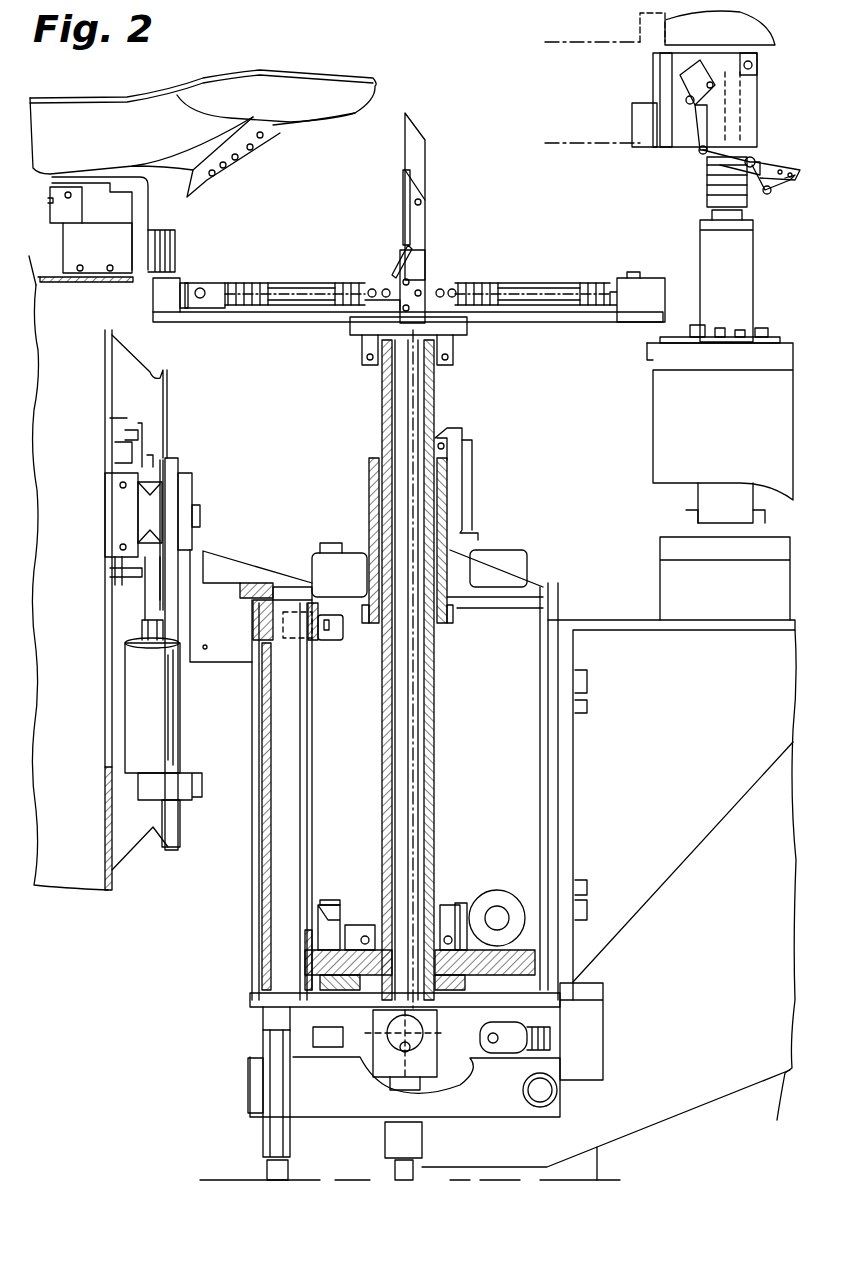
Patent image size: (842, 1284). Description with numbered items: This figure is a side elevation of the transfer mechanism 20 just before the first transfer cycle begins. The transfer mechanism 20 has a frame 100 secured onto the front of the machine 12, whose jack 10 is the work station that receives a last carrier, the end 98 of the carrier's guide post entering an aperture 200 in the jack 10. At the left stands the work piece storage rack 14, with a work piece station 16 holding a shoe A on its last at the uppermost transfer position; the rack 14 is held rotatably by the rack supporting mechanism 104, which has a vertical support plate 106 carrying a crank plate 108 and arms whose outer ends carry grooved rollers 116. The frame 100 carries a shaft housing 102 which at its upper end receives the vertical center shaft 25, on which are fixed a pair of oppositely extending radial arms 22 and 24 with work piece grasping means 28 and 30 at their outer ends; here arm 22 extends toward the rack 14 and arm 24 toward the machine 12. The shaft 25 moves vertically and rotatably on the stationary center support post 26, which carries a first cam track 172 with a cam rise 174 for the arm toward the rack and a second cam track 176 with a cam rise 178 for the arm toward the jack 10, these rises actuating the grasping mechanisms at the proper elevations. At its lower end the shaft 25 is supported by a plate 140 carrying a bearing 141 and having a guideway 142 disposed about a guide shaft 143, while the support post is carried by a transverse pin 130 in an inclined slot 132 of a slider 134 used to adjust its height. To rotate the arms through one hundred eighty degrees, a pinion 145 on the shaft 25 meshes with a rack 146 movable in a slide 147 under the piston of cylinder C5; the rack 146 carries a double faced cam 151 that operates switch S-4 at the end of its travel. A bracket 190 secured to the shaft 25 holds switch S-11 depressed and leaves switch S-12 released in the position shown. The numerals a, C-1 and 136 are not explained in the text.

The shoe A is at (332, 78).
The heel seat a is at (63, 247).
The work piece station 16 is at (112, 252).
The work piece grasping means 28 is at (184, 280).
The cam rise 178 is at (418, 128).
The second cam track 176 is at (427, 162).
The first cam track 172 is at (400, 192).
The cam rise 174 is at (392, 265).
The center support post 26 is at (428, 247).
The jack 10 is at (740, 96).
The end of the guide post 98 is at (740, 120).
The aperture 200 is at (735, 148).
The work piece grasping means 30 is at (649, 278).
The machine 12 is at (790, 337).
The radial arm 22 is at (275, 322).
The radial arm 24 is at (540, 322).
The center shaft 25 is at (437, 394).
The work piece storage rack 14 is at (125, 380).
The crank plate 108 is at (172, 460).
The rack supporting mechanism 104 is at (215, 488).
The grooved roller 116 is at (145, 513).
The vertical support plate 106 is at (193, 536).
The shaft housing 102 is at (368, 492).
The bracket 190 is at (472, 478).
The switch S-12 is at (320, 545).
The switch S-11 is at (497, 548).
The switch S-4 is at (338, 640).
The frame 100 is at (533, 732).
The transfer mechanism 20 is at (590, 763).
The cylinder C-1 is at (160, 724).
The guide shaft 143 is at (305, 806).
The guideway 142 is at (296, 916).
The slide 147 is at (323, 906).
The double faced cam 151 is at (333, 900).
The rack 146 is at (360, 922).
The pinion 145 is at (436, 920).
The cylinder C5 is at (497, 890).
The bearing 141 is at (348, 971).
The plate 140 is at (495, 1000).
The block 136 is at (380, 1030).
The inclined slot 132 is at (480, 1036).
The transverse pin 130 is at (405, 1047).
The slider 134 is at (468, 1058).